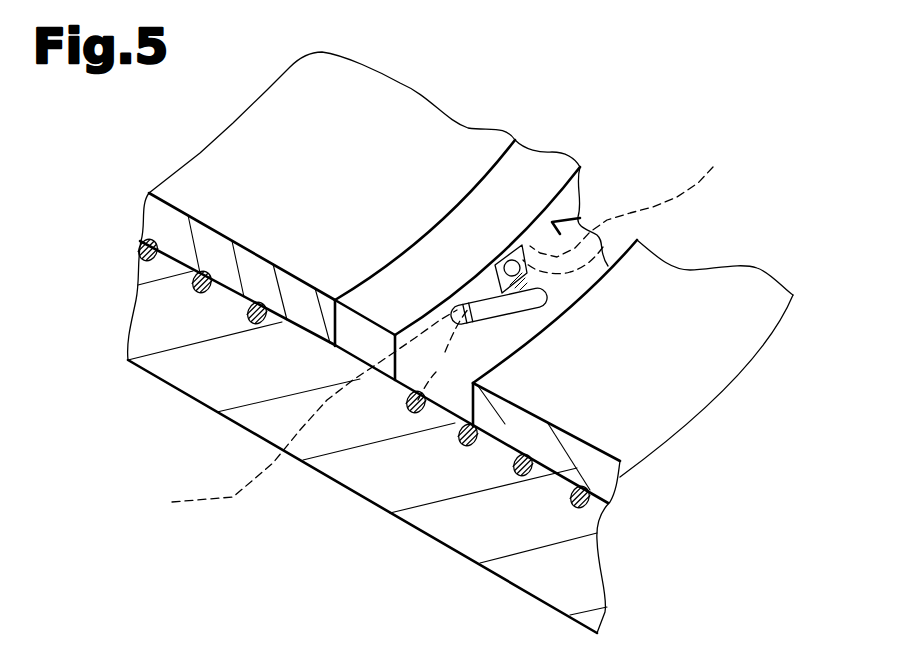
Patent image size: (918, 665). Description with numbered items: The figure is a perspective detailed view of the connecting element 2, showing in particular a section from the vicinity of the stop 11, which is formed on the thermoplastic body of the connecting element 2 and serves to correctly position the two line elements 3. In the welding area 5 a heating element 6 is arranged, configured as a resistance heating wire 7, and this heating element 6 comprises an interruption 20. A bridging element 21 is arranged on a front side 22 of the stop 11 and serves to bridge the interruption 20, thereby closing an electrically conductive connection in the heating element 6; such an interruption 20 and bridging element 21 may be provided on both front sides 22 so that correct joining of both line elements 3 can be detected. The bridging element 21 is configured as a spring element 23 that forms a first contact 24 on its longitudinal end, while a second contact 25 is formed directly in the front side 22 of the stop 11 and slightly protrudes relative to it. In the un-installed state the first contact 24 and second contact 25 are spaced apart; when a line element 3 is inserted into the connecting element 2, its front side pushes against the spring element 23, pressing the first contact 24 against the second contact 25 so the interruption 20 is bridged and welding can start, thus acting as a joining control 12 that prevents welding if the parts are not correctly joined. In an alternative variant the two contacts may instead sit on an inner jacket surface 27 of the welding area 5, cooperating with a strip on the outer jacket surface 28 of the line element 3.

The connecting element 2 is at (248, 533).
The line element 3 is at (257, 152).
The welding area 5 is at (684, 137).
The heating element 6 is at (294, 412).
The resistance heating wire 7 is at (631, 203).
The stop 11 is at (530, 175).
The joining control 12 is at (440, 365).
The interruption 20 is at (466, 279).
The bridging element 21 is at (495, 308).
The front side 22 is at (455, 193).
The spring element 23 is at (513, 327).
The first contact 24 is at (570, 315).
The second contact 25 is at (593, 288).
The inner jacket surface 27 is at (620, 243).
The outer jacket surface 28 is at (598, 530).